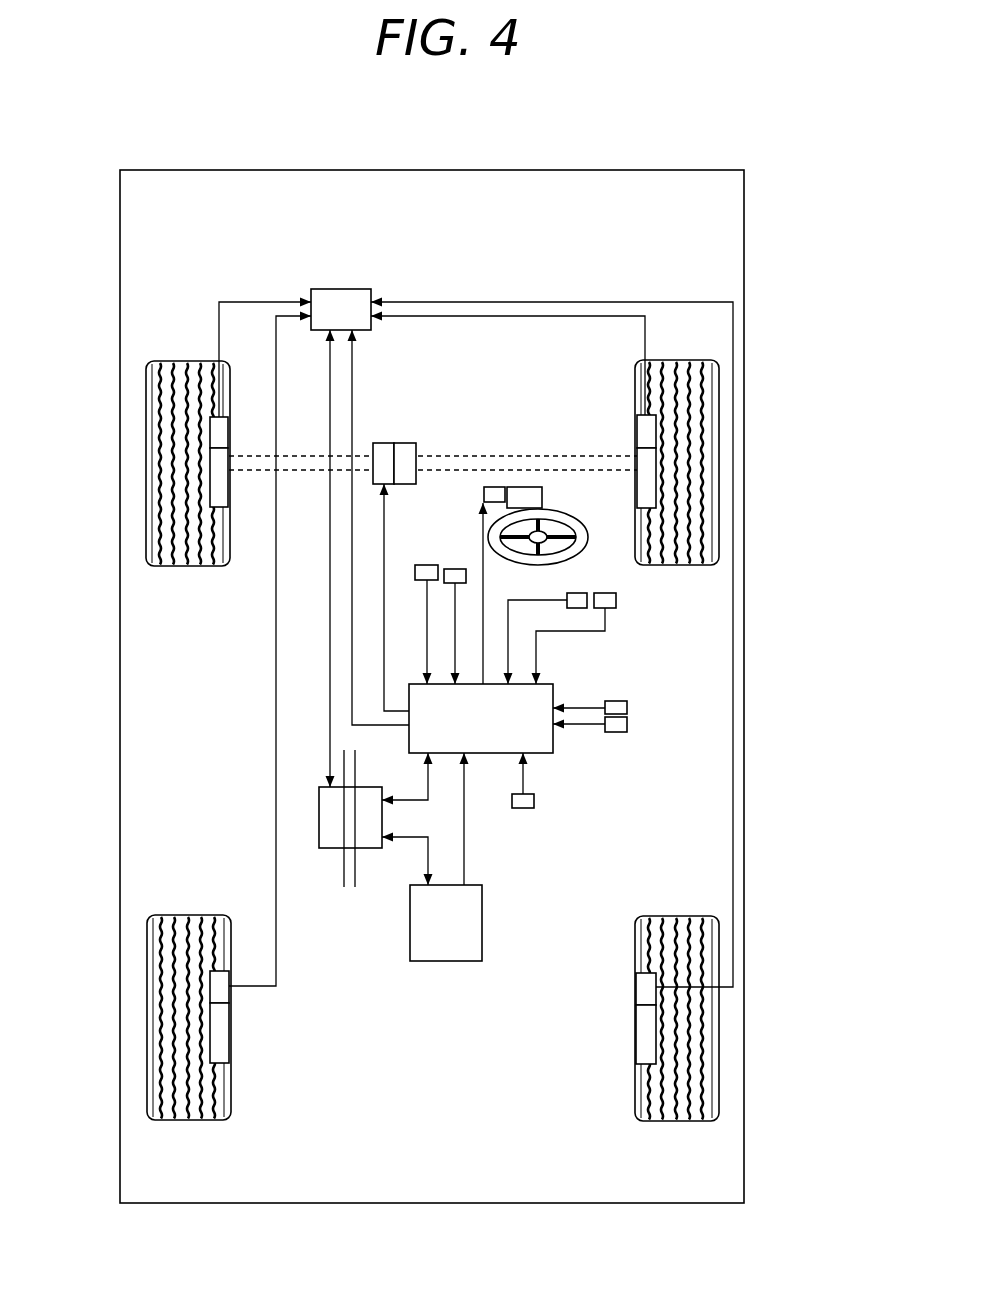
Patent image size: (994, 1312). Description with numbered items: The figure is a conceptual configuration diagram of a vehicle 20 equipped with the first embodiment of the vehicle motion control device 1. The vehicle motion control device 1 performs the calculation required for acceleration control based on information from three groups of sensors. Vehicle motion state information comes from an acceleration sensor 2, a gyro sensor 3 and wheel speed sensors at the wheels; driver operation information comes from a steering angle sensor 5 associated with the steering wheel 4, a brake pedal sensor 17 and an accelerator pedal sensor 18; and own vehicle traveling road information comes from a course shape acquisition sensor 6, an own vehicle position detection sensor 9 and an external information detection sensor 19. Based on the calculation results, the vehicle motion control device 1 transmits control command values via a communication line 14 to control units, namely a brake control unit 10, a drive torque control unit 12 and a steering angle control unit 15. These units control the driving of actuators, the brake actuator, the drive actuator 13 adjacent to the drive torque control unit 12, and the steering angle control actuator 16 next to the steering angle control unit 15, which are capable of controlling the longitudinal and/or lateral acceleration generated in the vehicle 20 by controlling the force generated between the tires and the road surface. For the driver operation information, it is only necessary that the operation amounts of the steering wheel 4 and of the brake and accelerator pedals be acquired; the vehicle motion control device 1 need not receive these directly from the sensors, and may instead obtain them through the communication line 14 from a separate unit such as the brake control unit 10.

The vehicle motion control device 1 is at (556, 745).
The acceleration sensor 2 is at (627, 726).
The gyro sensor 3 is at (627, 707).
The steering wheel 4 is at (567, 515).
The steering angle sensor 5 is at (455, 569).
The course shape acquisition sensor 6 is at (427, 565).
The own vehicle position detection sensor 9 is at (448, 961).
The brake control unit 10 is at (331, 289).
The drive torque control unit 12 is at (385, 443).
The drive actuator 13 is at (405, 443).
The communication line 14 is at (326, 848).
The steering angle control unit 15 is at (494, 487).
The steering angle control actuator 16 is at (523, 487).
The brake pedal sensor 17 is at (578, 593).
The accelerator pedal sensor 18 is at (616, 600).
The external information detection sensor 19 is at (523, 808).
The vehicle 20 is at (748, 146).